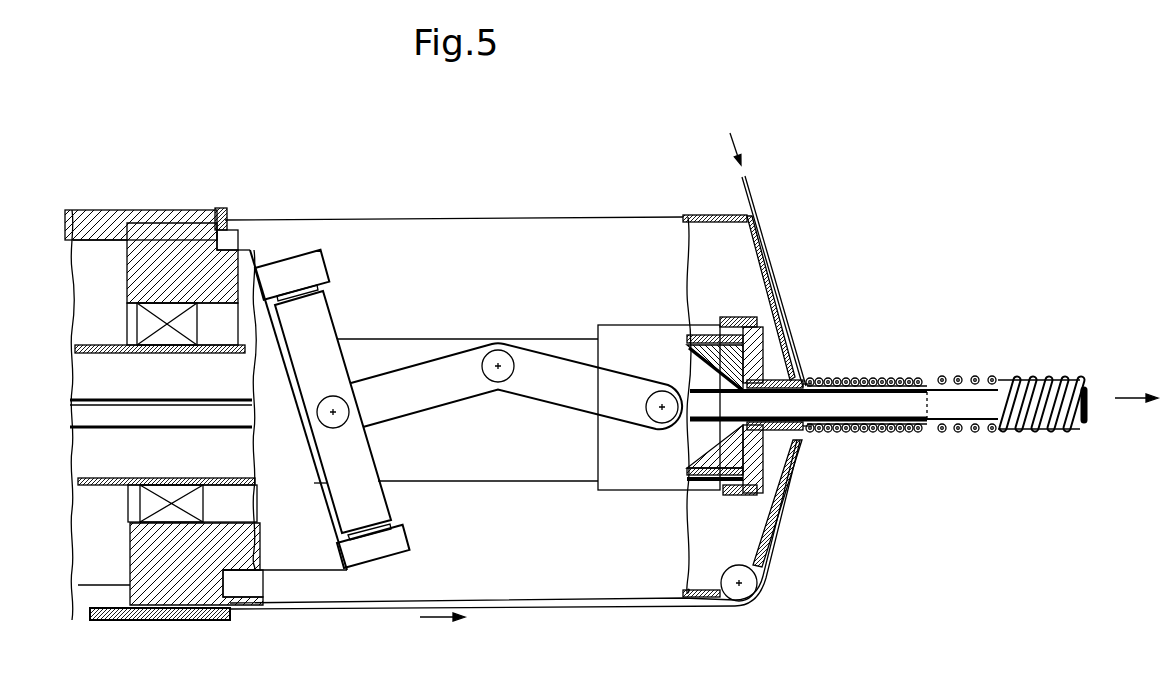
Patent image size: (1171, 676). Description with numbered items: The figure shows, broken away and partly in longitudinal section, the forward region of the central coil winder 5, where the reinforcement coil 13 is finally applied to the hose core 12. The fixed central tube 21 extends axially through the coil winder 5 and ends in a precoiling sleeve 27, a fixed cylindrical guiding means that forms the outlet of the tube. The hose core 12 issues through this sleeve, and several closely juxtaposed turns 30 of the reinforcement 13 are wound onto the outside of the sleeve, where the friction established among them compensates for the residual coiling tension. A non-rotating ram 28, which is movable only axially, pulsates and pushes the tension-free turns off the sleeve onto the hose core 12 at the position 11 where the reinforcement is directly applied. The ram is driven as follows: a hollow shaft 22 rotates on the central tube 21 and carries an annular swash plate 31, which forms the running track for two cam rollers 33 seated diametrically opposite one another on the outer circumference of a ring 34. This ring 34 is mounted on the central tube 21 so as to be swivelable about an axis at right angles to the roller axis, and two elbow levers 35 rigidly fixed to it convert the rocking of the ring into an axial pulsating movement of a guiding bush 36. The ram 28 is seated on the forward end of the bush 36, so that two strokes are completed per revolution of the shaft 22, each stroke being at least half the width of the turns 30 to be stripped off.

The central coil winder 5 is at (328, 206).
The position of coiling 11 is at (810, 381).
The hose core 12 is at (188, 432).
The reinforcement coil 13 is at (749, 204).
The central tube 21 is at (197, 350).
The hollow shaft 22 is at (109, 217).
The precoiling sleeve 27 is at (927, 379).
The ram 28 is at (764, 356).
The turns 30 is at (957, 433).
The annular swash plate 31 is at (310, 558).
The cam rollers 33 is at (327, 270).
The ring 34 is at (325, 325).
The elbow levers 35 is at (443, 373).
The guiding bush 36 is at (627, 472).